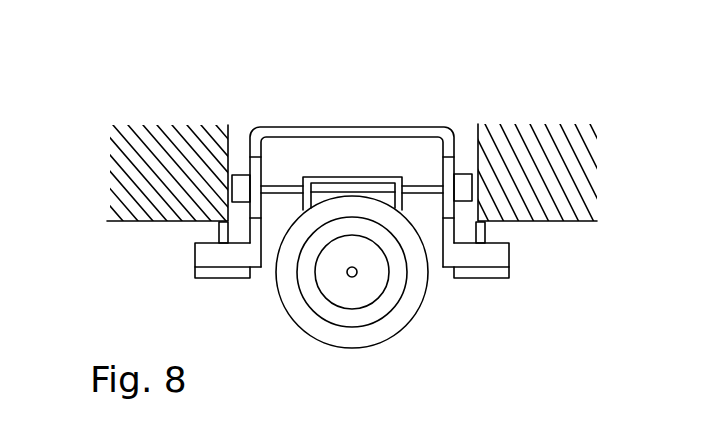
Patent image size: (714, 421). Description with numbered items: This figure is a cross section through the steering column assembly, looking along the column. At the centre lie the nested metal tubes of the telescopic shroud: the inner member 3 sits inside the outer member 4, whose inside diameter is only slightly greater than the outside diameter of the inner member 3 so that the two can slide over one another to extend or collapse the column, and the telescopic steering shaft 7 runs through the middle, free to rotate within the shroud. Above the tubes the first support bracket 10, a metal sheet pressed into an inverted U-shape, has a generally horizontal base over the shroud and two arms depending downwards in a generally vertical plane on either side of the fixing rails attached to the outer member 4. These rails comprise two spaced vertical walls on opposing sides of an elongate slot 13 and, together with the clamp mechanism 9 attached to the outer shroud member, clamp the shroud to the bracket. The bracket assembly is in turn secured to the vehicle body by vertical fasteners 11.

The inner member 3 is at (338, 315).
The outer member 4 is at (396, 327).
The telescopic steering shaft 7 is at (347, 277).
The clamp mechanism 9 is at (402, 211).
The first support bracket 10 is at (398, 128).
The vertical fasteners 11 is at (219, 237).
The elongate slot 13 is at (253, 157).